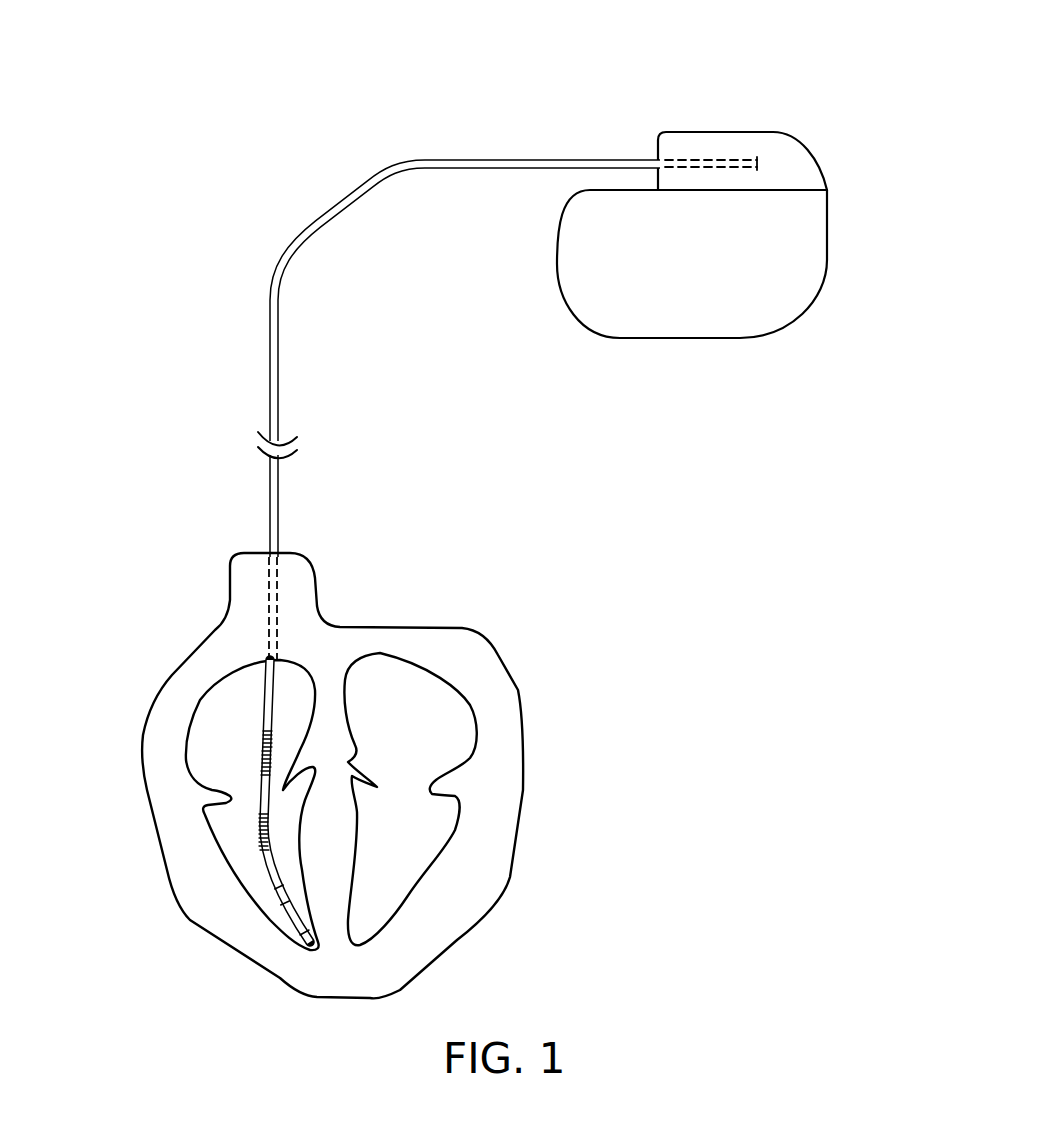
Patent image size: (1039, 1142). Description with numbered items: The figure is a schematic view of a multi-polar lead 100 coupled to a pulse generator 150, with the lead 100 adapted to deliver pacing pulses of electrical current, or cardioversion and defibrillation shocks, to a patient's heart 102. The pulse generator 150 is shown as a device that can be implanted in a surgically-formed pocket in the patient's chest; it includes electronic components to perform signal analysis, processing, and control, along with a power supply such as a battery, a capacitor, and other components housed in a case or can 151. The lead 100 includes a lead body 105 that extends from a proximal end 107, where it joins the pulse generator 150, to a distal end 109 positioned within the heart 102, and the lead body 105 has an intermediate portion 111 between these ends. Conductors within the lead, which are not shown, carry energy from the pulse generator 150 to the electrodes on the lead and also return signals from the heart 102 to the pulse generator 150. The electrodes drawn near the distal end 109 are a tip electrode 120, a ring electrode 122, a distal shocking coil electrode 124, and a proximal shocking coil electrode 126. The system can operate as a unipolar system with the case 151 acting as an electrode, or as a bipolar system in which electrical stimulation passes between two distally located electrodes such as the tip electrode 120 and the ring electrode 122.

The multi-polar lead 100 is at (290, 240).
The heart 102 is at (460, 643).
The lead body 105 is at (498, 167).
The proximal end 107 is at (657, 160).
The distal end 109 is at (303, 933).
The intermediate portion 111 is at (275, 407).
The tip electrode 120 is at (302, 947).
The ring electrode 122 is at (277, 887).
The distal shocking coil electrode 124 is at (260, 830).
The proximal shocking coil electrode 126 is at (263, 748).
The pulse generator 150 is at (798, 125).
The case 151 is at (763, 310).